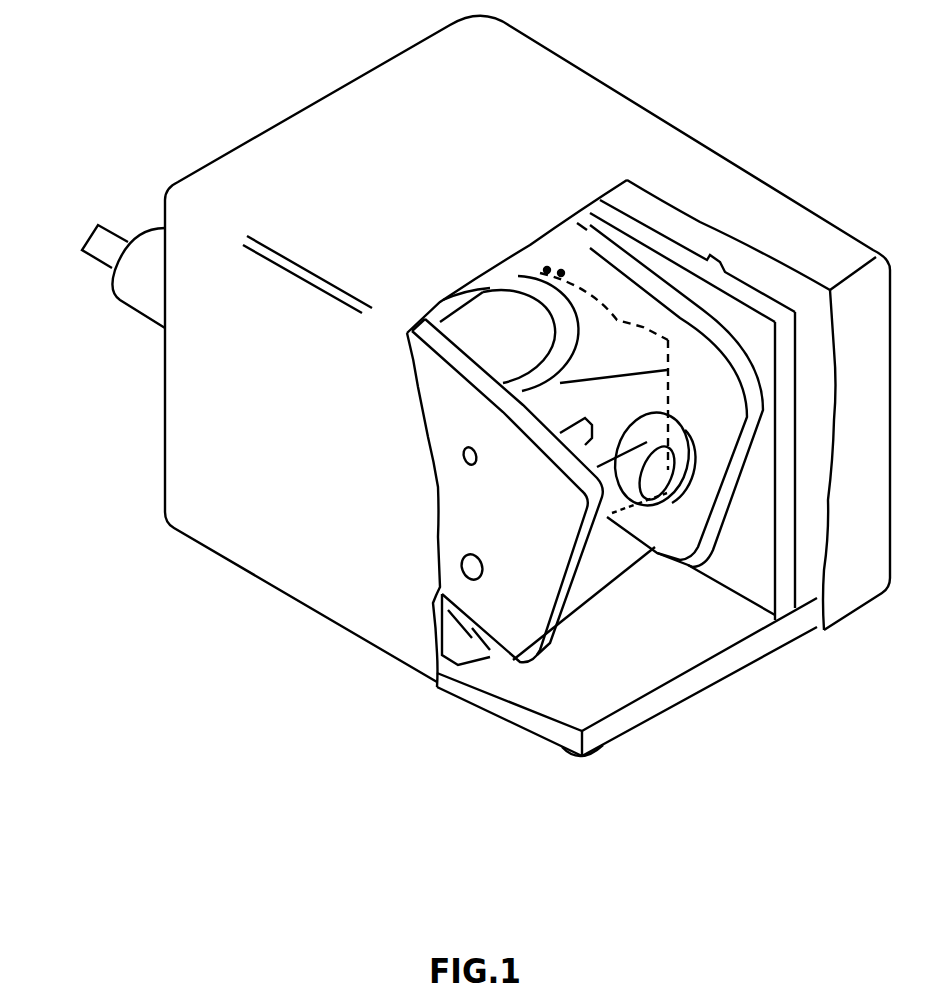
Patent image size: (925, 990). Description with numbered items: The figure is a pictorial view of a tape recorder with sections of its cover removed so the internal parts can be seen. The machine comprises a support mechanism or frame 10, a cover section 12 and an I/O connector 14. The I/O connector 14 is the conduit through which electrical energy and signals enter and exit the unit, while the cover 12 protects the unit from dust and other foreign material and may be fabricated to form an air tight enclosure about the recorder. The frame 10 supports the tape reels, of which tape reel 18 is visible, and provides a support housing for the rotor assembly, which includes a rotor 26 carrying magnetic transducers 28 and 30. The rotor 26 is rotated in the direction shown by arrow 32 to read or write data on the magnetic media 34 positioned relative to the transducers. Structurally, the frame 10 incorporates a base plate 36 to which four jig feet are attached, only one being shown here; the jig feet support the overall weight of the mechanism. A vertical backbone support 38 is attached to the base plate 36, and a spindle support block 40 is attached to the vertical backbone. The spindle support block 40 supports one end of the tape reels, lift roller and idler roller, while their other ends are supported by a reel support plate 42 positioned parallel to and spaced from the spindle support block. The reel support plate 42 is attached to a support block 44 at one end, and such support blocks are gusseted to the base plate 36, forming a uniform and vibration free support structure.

The frame 10 is at (541, 673).
The cover section 12 is at (584, 93).
The I/O connector 14 is at (118, 298).
The tape reel 18 is at (632, 488).
The rotor 26 is at (570, 367).
The magnetic transducer 28 is at (552, 268).
The magnetic transducer 30 is at (563, 271).
The arrow 32 is at (573, 299).
The magnetic media 34 is at (672, 394).
The base plate 36 is at (618, 728).
The vertical backbone support 38 is at (785, 600).
The spindle support block 40 is at (680, 566).
The reel support plate 42 is at (476, 495).
The support block 44 is at (618, 552).